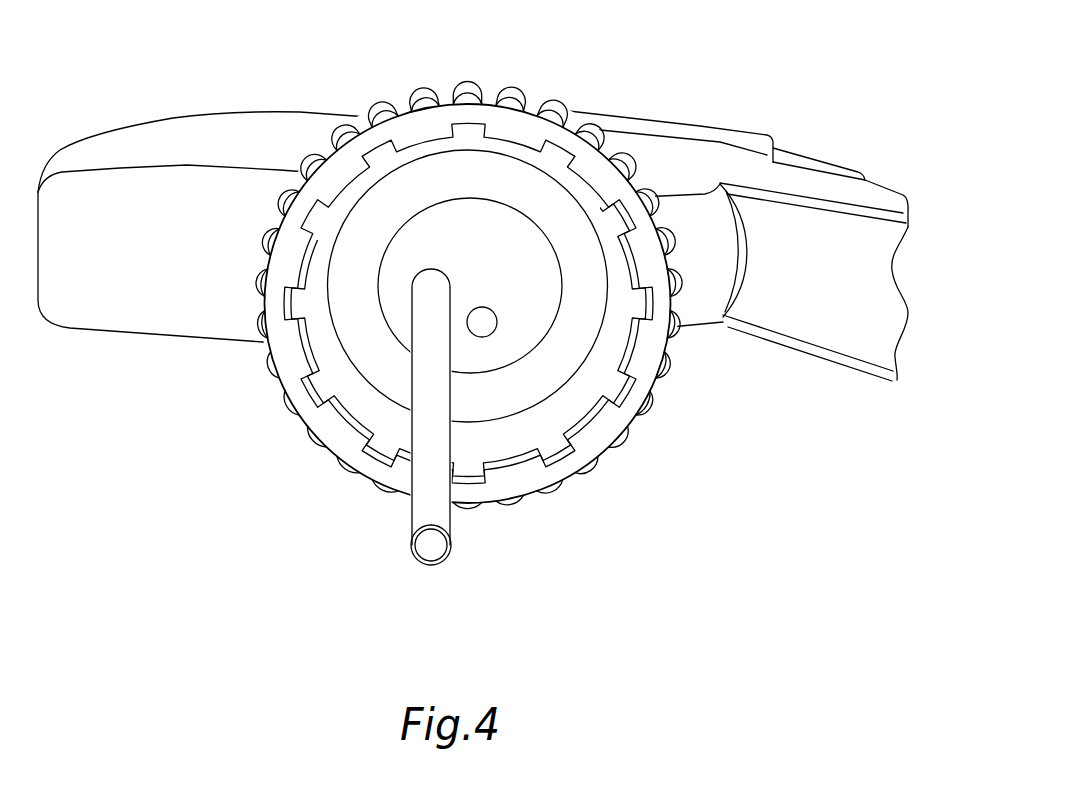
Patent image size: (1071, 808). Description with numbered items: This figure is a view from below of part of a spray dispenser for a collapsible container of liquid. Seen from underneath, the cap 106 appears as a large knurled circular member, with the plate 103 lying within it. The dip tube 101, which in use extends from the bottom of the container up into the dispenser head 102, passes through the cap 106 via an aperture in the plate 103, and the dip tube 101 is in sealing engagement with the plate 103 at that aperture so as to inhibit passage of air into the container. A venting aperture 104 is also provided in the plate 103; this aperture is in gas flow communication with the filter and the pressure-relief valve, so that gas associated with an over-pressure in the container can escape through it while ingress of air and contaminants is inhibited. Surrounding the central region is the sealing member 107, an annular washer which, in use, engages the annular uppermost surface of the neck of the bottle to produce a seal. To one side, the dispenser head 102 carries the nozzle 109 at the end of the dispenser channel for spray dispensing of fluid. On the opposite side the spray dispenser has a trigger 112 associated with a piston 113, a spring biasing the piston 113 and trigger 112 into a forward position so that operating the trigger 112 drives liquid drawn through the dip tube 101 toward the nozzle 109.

The dip tube 101 is at (418, 512).
The dispenser head 102 is at (237, 190).
The plate 103 is at (383, 303).
The venting aperture 104 is at (482, 307).
The cap 106 is at (588, 438).
The sealing member 107 is at (565, 348).
The nozzle 109 is at (827, 165).
The trigger 112 is at (850, 332).
The piston 113 is at (703, 287).